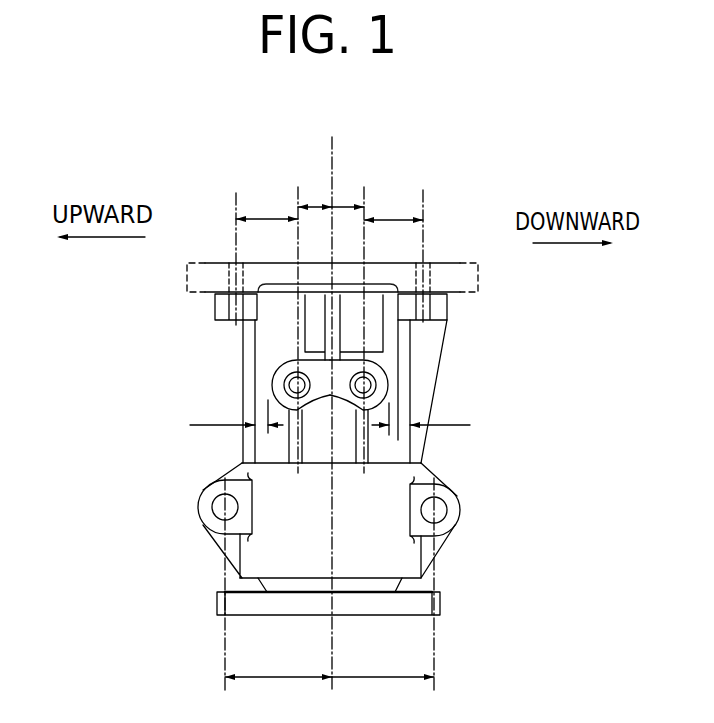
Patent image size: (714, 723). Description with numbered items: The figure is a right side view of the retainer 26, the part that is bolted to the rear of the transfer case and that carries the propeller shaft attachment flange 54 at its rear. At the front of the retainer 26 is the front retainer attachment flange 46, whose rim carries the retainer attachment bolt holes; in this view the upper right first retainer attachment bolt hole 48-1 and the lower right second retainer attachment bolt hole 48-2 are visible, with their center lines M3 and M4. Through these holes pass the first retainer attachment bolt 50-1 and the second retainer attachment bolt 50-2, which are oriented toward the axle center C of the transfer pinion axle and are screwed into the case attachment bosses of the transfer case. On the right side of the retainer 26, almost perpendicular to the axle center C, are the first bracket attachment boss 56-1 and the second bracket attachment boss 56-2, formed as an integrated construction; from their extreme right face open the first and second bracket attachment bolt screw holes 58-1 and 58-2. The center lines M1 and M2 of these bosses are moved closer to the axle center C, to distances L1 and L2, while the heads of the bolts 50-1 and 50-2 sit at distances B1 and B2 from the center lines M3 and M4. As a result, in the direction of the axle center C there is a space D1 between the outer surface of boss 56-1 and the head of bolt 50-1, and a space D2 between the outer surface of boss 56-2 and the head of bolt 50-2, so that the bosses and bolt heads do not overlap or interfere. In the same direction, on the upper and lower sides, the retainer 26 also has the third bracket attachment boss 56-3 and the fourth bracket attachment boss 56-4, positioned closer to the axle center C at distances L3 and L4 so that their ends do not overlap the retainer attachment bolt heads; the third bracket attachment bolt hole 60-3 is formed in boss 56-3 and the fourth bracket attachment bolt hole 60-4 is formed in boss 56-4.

The retainer 26 is at (512, 138).
The front retainer attachment flange 46 is at (215, 286).
The NO. 1 retainer attachment bolt hole 48-1 is at (237, 263).
The NO. 2 retainer attachment bolt hole 48-2 is at (463, 286).
The NO. 1 retainer attachment bolt 50-1 is at (215, 307).
The NO. 2 retainer attachment bolt 50-2 is at (447, 306).
The propeller shaft attachment flange 54 is at (440, 605).
The NO. 1 bracket attachment boss 56-1 is at (273, 376).
The NO. 2 bracket attachment boss 56-2 is at (386, 370).
The NO. 3 bracket attachment boss 56-3 is at (198, 500).
The NO. 4 bracket attachment boss 56-4 is at (462, 502).
The NO. 1 bracket attachment bolt screw hole 58-1 is at (284, 386).
The NO. 2 bracket attachment bolt screw hole 58-2 is at (376, 386).
The NO. 3 bracket attachment bolt hole 60-3 is at (214, 512).
The NO. 4 bracket attachment bolt hole 60-4 is at (443, 514).
The axle center C is at (340, 138).
The center line of NO. 1 bracket attachment boss M1 is at (298, 187).
The center line of NO. 2 bracket attachment boss M2 is at (364, 187).
The center line of NO. 1 retainer attachment bolt hole M3 is at (236, 193).
The center line of NO. 2 retainer attachment bolt hole M4 is at (423, 190).
The distance L1 is at (312, 205).
The distance L2 is at (350, 205).
The distance L3 is at (278, 663).
The distance L4 is at (383, 663).
The distance B1 is at (267, 205).
The distance B2 is at (393, 207).
The space D1 is at (236, 414).
The space D2 is at (422, 415).